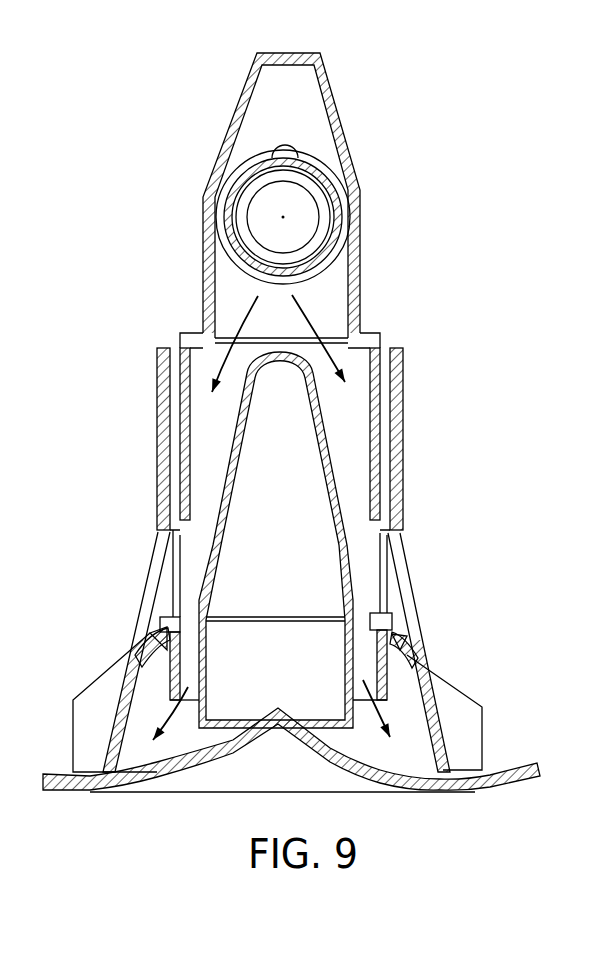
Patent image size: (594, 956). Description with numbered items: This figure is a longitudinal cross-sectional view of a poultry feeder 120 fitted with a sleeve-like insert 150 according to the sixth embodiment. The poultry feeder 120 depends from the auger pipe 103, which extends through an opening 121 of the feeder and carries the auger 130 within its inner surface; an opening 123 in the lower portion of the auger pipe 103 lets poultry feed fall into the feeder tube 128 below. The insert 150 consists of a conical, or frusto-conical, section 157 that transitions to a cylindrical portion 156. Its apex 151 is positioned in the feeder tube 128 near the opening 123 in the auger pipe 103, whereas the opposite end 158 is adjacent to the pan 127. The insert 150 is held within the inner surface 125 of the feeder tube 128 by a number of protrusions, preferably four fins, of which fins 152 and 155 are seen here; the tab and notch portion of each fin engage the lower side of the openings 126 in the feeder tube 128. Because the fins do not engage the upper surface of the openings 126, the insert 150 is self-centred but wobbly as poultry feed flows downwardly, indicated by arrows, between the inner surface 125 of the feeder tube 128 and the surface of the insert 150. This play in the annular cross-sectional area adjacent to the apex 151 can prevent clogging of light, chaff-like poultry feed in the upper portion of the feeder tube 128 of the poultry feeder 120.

The poultry feeder 120 is at (342, 93).
The auger pipe 103 is at (233, 187).
The opening 121 is at (327, 172).
The auger 130 is at (313, 242).
The opening 123 is at (257, 264).
The apex 151 is at (293, 342).
The inner surface 125 is at (366, 377).
The conical section 157 is at (257, 453).
The insert 150 is at (340, 428).
The feeder tube 128 is at (403, 460).
The openings 126 is at (158, 532).
The protrusion 152 is at (190, 588).
The protrusion 155 is at (355, 578).
The cylindrical portion 156 is at (290, 668).
The pan 127 is at (507, 770).
The opposite end 158 is at (215, 730).